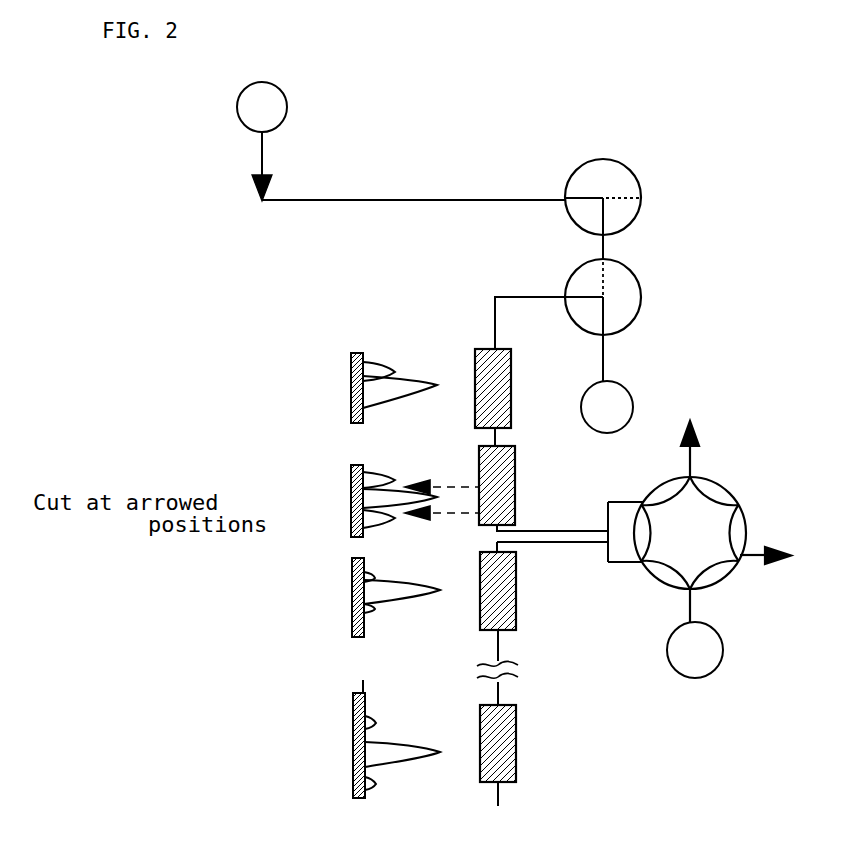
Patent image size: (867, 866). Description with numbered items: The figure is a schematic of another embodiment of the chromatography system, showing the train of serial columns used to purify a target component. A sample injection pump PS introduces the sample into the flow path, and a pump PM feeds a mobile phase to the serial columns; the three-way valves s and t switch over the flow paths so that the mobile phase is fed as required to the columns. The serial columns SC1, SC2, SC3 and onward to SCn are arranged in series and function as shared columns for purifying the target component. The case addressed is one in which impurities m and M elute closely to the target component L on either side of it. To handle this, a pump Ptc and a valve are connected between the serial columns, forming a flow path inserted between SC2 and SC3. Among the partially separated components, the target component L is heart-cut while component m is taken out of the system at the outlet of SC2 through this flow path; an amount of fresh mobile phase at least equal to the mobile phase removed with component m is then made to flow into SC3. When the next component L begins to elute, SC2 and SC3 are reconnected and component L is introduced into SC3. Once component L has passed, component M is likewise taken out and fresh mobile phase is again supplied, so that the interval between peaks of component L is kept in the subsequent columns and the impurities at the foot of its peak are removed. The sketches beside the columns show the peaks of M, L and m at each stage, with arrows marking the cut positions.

The sample injection pump PS is at (262, 141).
The 3-way valve s is at (608, 204).
The 3-way valve t is at (608, 320).
The pump feeding mobile phase to serial column PM is at (607, 407).
The serial column SC1 is at (518, 388).
The serial column SC2 is at (524, 485).
The serial column SC3 is at (525, 591).
The serial column SCn is at (531, 743).
The pump Ptc is at (695, 650).
The target component L is at (377, 575).
The impurity component M is at (355, 549).
The impurity component m is at (355, 650).